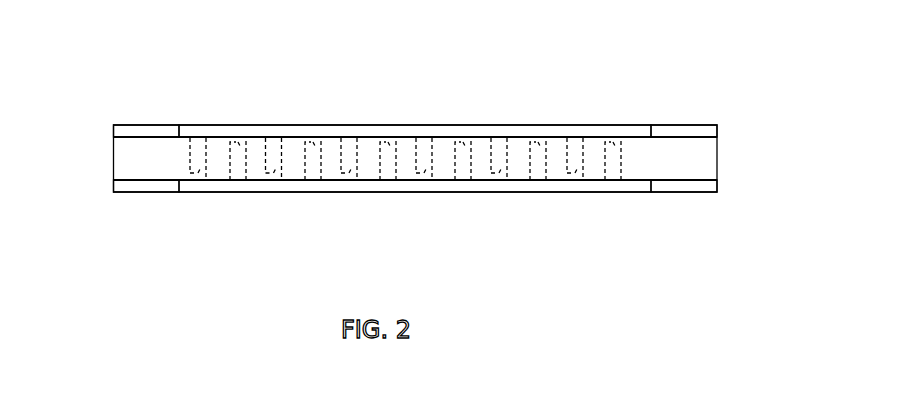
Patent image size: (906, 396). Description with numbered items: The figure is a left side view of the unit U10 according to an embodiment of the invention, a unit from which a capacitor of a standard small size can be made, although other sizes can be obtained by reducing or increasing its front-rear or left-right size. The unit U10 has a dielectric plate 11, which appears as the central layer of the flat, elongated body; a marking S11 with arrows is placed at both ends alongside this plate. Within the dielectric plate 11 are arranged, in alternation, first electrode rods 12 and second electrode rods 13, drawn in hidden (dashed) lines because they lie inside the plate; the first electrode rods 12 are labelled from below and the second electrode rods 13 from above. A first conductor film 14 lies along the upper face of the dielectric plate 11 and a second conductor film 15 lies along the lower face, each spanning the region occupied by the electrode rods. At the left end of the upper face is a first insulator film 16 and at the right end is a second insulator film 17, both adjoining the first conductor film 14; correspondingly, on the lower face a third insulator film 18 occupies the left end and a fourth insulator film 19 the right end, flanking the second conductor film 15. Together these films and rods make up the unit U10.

The unit U10 is at (121, 123).
The dielectric plate 11 is at (120, 149).
The surface of substrate S11 is at (110, 166).
The first electrode rods 12 is at (193, 181).
The second electrode rods 13 is at (234, 141).
The first conductor film 14 is at (578, 135).
The second conductor film 15 is at (632, 182).
The first insulator film 16 is at (143, 135).
The second insulator film 17 is at (687, 135).
The third insulator film 18 is at (143, 182).
The fourth insulator film 19 is at (689, 182).